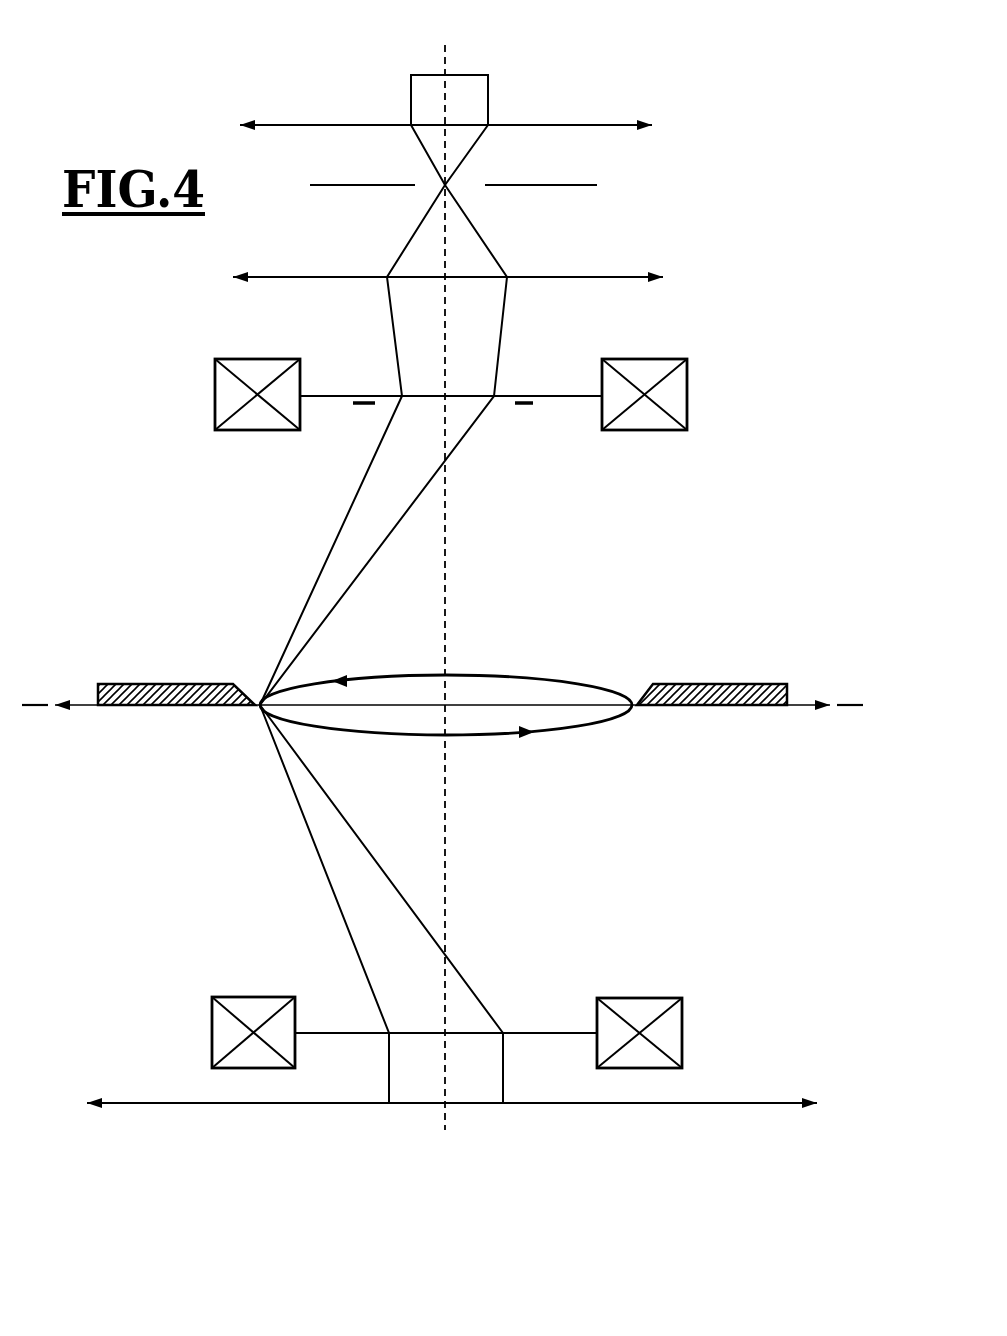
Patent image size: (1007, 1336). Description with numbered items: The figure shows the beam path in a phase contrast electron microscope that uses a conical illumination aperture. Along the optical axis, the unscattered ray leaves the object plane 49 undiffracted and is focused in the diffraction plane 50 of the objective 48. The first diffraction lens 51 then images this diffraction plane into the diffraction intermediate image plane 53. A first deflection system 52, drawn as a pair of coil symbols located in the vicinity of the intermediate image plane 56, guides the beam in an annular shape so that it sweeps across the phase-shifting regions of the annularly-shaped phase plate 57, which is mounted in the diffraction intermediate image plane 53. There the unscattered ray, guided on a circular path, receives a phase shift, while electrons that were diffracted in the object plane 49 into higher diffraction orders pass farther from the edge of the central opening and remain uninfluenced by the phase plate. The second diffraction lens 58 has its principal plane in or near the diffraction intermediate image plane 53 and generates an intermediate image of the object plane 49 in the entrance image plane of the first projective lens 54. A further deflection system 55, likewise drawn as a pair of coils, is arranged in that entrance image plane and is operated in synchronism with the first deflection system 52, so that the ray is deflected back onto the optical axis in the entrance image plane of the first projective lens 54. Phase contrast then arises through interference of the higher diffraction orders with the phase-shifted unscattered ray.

The object plane 49 is at (488, 77).
The objective 48 is at (608, 125).
The diffraction plane 50 is at (600, 178).
The first diffraction lens 51 is at (633, 277).
The first deflection system 52 is at (687, 397).
The intermediate image plane 56 is at (530, 405).
The annularly-shaped phase plate 57 is at (747, 684).
The second diffraction lens 58 is at (800, 705).
The diffraction intermediate image plane 53 is at (853, 705).
The further deflection system 55 is at (682, 1030).
The first projective lens 54 is at (748, 1103).